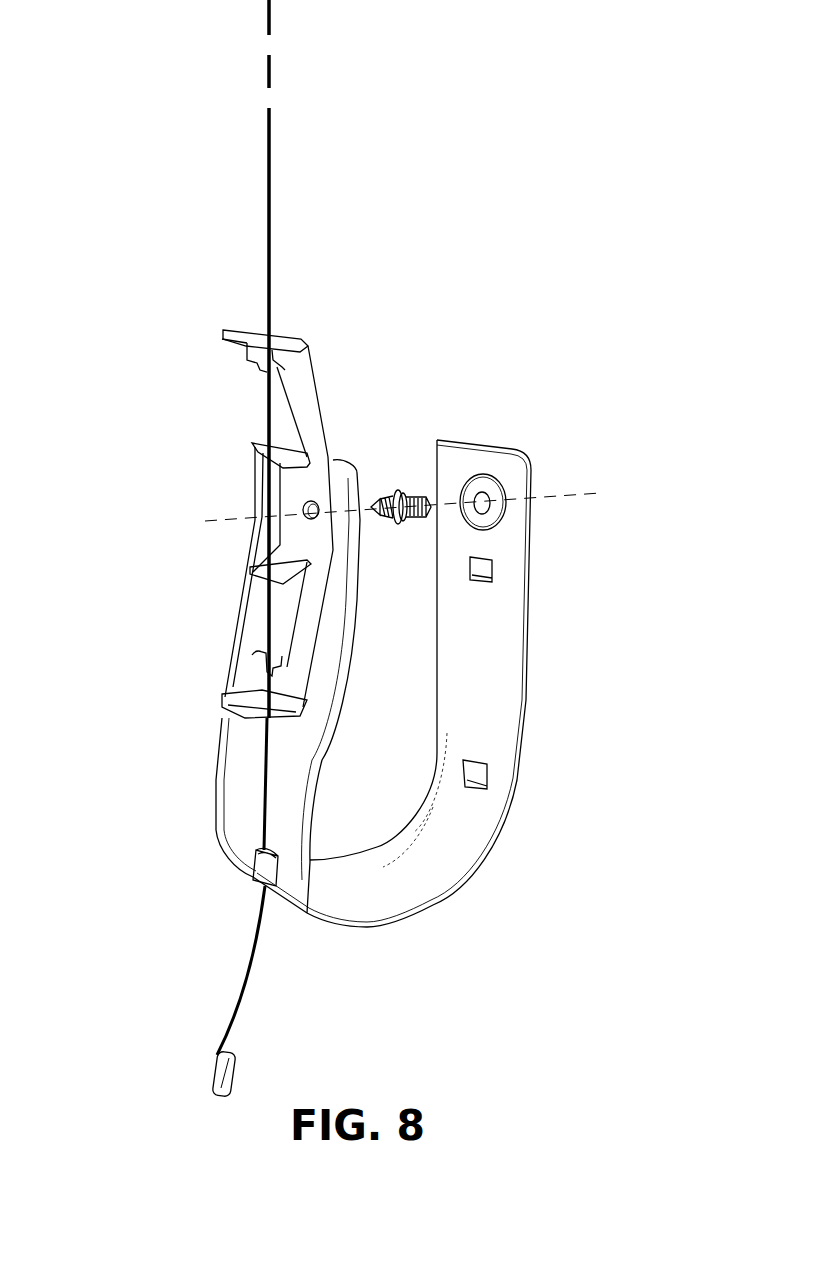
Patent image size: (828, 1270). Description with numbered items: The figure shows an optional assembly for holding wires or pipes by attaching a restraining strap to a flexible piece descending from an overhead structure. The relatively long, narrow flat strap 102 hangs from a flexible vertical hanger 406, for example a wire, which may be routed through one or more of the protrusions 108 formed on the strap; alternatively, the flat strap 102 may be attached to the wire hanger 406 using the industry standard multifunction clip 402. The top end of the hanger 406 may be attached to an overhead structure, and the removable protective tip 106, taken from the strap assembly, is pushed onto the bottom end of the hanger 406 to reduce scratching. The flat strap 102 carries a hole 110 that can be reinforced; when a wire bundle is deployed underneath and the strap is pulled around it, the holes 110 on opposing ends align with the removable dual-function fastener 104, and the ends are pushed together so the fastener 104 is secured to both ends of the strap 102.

The flat strap 102 is at (535, 697).
The dual-function fastener 104 is at (398, 488).
The protective tip 106 is at (208, 1058).
The protrusion 108 is at (252, 868).
The hole 110 is at (483, 505).
The multifunction clip 402 is at (312, 352).
The flexible vertical hanger 406 is at (275, 133).